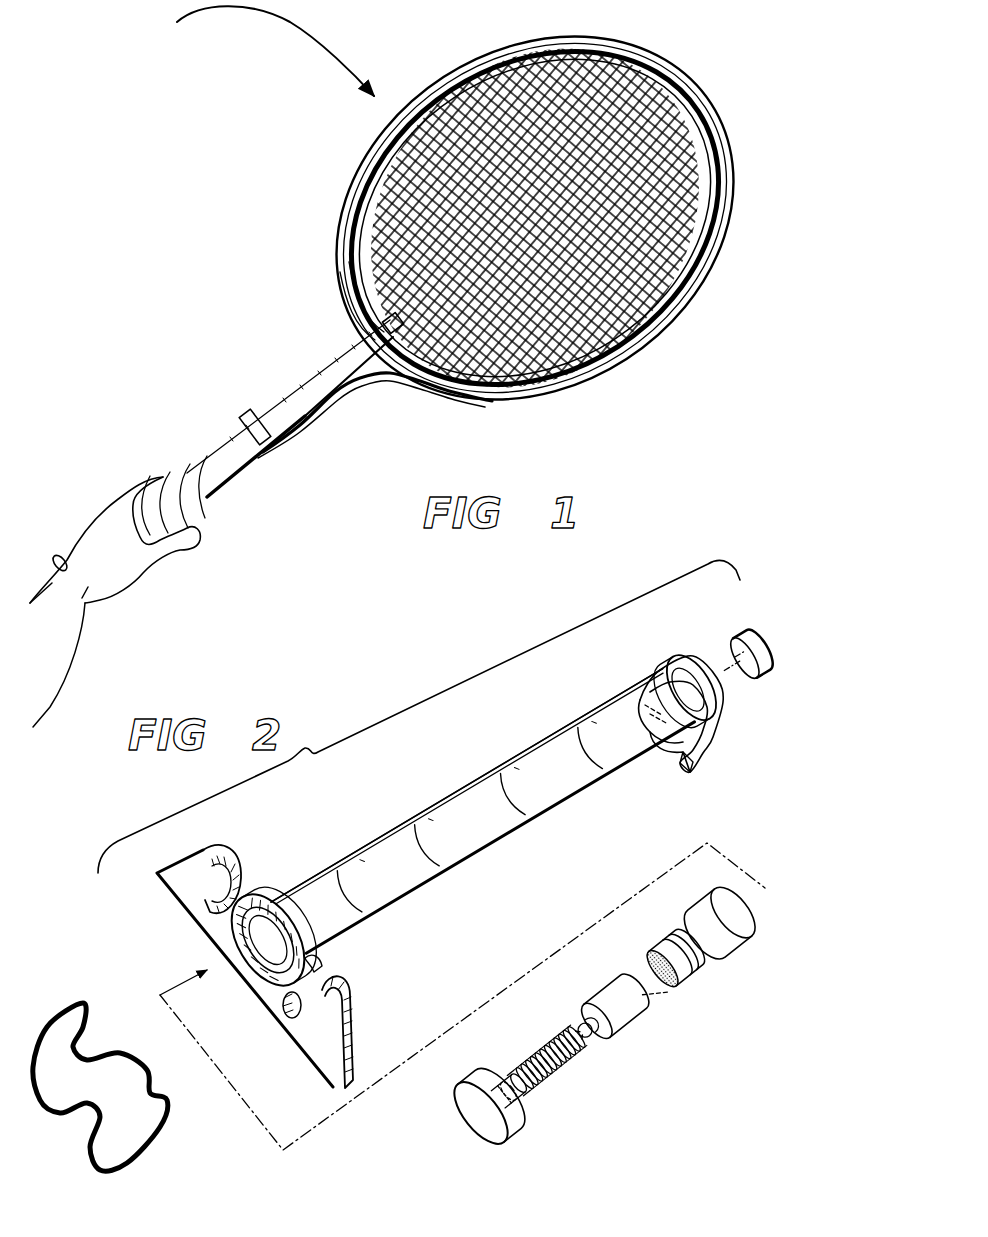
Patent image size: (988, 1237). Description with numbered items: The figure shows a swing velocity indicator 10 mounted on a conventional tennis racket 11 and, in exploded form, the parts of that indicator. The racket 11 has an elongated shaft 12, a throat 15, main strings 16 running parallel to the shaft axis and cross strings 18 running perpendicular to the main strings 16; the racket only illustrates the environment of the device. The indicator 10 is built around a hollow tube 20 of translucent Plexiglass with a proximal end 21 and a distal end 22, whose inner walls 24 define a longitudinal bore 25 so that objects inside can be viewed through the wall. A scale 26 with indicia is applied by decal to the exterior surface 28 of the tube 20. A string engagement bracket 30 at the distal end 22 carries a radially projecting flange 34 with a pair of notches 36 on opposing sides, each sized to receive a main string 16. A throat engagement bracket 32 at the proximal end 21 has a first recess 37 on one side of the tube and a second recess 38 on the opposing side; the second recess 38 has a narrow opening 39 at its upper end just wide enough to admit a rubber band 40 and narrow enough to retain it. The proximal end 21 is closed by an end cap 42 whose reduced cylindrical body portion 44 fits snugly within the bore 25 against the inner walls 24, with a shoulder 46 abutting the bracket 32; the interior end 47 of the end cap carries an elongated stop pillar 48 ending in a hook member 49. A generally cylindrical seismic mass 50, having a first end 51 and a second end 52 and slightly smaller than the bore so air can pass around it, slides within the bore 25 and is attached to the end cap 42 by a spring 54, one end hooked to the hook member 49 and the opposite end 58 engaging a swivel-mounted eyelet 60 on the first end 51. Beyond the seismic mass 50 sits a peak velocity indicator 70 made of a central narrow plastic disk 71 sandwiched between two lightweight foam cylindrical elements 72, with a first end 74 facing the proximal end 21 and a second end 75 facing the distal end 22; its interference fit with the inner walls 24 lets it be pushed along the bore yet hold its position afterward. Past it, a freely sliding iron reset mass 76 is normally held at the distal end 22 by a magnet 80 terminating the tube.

In FIG. 1, the swing velocity indicator 10 is at (300, 376).
In FIG. 2, the swing velocity indicator 10 is at (500, 726).
In FIG. 1, the tennis racket 11 is at (312, 185).
In FIG. 1, the elongated shaft 12 is at (303, 426).
In FIG. 1, the throat 15 is at (357, 389).
In FIG. 1, the main strings 16 is at (669, 86).
In FIG. 1, the cross strings 18 is at (418, 390).
In FIG. 2, the hollow tube 20 is at (372, 828).
In FIG. 2, the proximal end 21 is at (245, 943).
In FIG. 2, the distal end 22 is at (700, 661).
In FIG. 2, the inner walls 24 is at (266, 980).
In FIG. 2, the longitudinal bore 25 is at (258, 968).
In FIG. 2, the scale 26 is at (420, 832).
In FIG. 2, the exterior surface 28 is at (470, 781).
In FIG. 2, the string engagement bracket 30 is at (717, 750).
In FIG. 2, the throat engagement bracket 32 is at (354, 1004).
In FIG. 2, the radially projecting flange 34 is at (672, 766).
In FIG. 2, the notches 36 is at (706, 766).
In FIG. 2, the first recess 37 is at (238, 880).
In FIG. 2, the second recess 38 is at (288, 1012).
In FIG. 2, the narrow opening 39 is at (320, 964).
In FIG. 2, the rubber band 40 is at (80, 1000).
In FIG. 2, the end cap 42 is at (476, 1128).
In FIG. 2, the reduced cylindrical body portion 44 is at (482, 1071).
In FIG. 2, the shoulder 46 is at (520, 1108).
In FIG. 2, the interior end 47 is at (534, 1098).
In FIG. 2, the stop pillar 48 is at (540, 1086).
In FIG. 2, the hook member 49 is at (516, 1069).
In FIG. 2, the seismic mass 50 is at (626, 1040).
In FIG. 2, the first end 51 is at (591, 1004).
In FIG. 2, the second end 52 is at (663, 1020).
In FIG. 2, the spring 54 is at (548, 1034).
In FIG. 2, the opposite end 58 is at (583, 1016).
In FIG. 2, the swivel-mounted eyelet 60 is at (598, 1001).
In FIG. 2, the peak velocity indicator 70 is at (706, 981).
In FIG. 2, the central narrow plastic disk 71 is at (660, 938).
In FIG. 2, the cylindrical elements 72 is at (696, 972).
In FIG. 2, the first end 74 is at (648, 968).
In FIG. 2, the second end 75 is at (688, 929).
In FIG. 2, the reset mass 76 is at (720, 950).
In FIG. 2, the magnet 80 is at (760, 641).